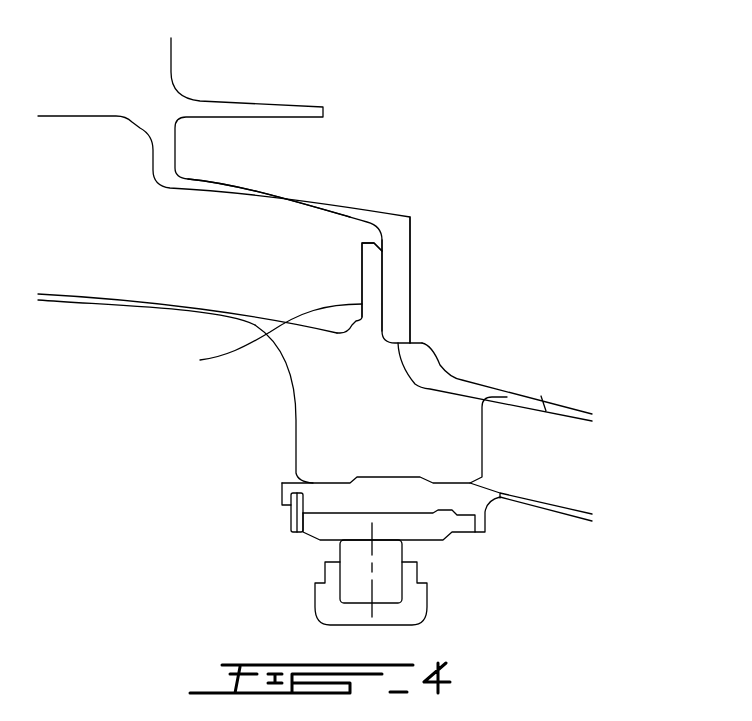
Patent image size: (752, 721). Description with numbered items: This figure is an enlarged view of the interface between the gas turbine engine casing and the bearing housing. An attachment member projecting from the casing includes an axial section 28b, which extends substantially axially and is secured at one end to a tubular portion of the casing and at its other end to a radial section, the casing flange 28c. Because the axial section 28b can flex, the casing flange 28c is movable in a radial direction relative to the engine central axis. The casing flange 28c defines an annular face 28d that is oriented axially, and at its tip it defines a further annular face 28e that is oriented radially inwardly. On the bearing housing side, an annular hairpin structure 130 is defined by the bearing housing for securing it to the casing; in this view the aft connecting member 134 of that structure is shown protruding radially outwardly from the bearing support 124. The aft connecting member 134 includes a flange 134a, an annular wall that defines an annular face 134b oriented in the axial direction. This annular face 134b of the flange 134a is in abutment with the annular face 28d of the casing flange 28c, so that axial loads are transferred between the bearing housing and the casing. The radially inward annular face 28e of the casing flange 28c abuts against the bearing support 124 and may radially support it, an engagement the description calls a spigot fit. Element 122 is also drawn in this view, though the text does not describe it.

The panel 122 is at (77, 294).
The bearing support 124 is at (285, 426).
The annular hairpin structure 130 is at (315, 229).
The aft connecting member 134 is at (247, 221).
The flange 134a is at (362, 272).
The annular face 134b is at (200, 360).
The axial section 28b is at (273, 193).
The casing flange 28c is at (411, 238).
The annular face 28d is at (383, 288).
The annular face 28e is at (445, 384).